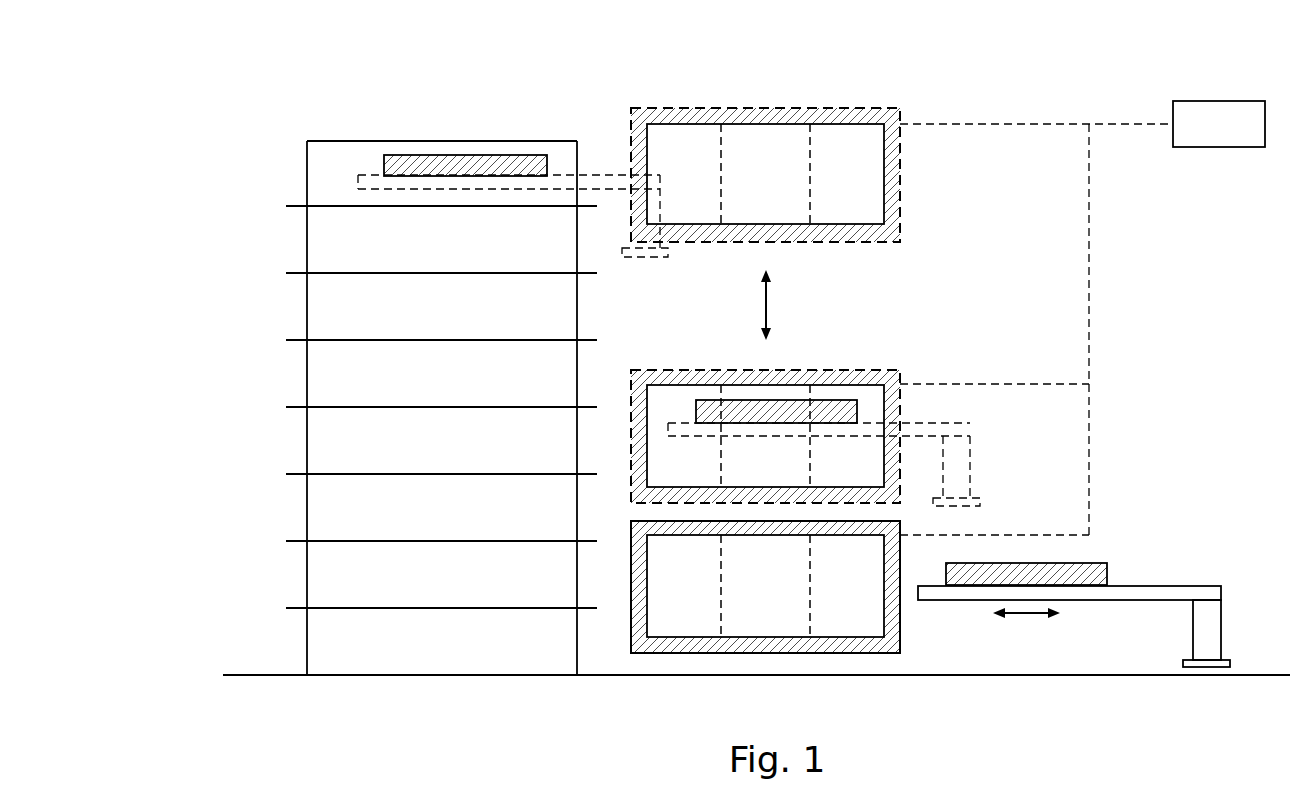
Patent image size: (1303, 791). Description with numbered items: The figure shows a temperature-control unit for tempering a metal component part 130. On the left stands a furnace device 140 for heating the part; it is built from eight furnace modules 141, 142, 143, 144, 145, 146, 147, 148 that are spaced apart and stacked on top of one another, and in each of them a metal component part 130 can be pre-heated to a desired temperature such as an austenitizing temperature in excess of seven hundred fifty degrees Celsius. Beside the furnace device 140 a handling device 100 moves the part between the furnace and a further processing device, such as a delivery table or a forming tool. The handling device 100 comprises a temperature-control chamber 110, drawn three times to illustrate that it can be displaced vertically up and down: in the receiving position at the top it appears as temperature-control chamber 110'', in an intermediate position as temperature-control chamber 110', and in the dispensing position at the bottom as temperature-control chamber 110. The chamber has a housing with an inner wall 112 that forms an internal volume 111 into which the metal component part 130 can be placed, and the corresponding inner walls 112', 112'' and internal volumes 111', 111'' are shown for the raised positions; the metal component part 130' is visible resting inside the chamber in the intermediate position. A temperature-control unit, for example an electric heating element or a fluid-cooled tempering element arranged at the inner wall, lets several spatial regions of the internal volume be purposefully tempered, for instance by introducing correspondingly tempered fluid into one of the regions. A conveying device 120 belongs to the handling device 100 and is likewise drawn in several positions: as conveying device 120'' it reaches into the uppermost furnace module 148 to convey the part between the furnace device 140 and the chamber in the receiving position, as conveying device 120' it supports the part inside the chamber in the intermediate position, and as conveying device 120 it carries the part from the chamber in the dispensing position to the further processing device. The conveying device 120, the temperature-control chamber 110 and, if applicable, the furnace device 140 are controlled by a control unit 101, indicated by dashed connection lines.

The handling device 100 is at (1185, 298).
The control unit 101 is at (1082, 318).
The temperature-control chamber 110 is at (823, 589).
The temperature-control chamber 110' is at (789, 392).
The temperature-control chamber 110'' is at (815, 175).
The internal volume 111 is at (688, 652).
The internal volume 111' is at (660, 388).
The internal volume 111'' is at (786, 117).
The inner wall 112 is at (790, 632).
The inner wall 112' is at (768, 390).
The inner wall 112'' is at (777, 137).
The conveying device 120 is at (1084, 584).
The conveying device 120' is at (860, 453).
The conveying device 120'' is at (513, 158).
The metal component part 130 is at (760, 321).
The metal component part 130' is at (791, 365).
The furnace device 140 is at (325, 150).
The furnace module 141 is at (439, 641).
The furnace module 142 is at (441, 585).
The furnace module 143 is at (441, 518).
The furnace module 144 is at (441, 451).
The furnace module 145 is at (441, 384).
The furnace module 146 is at (441, 318).
The furnace module 147 is at (441, 250).
The furnace module 148 is at (315, 188).